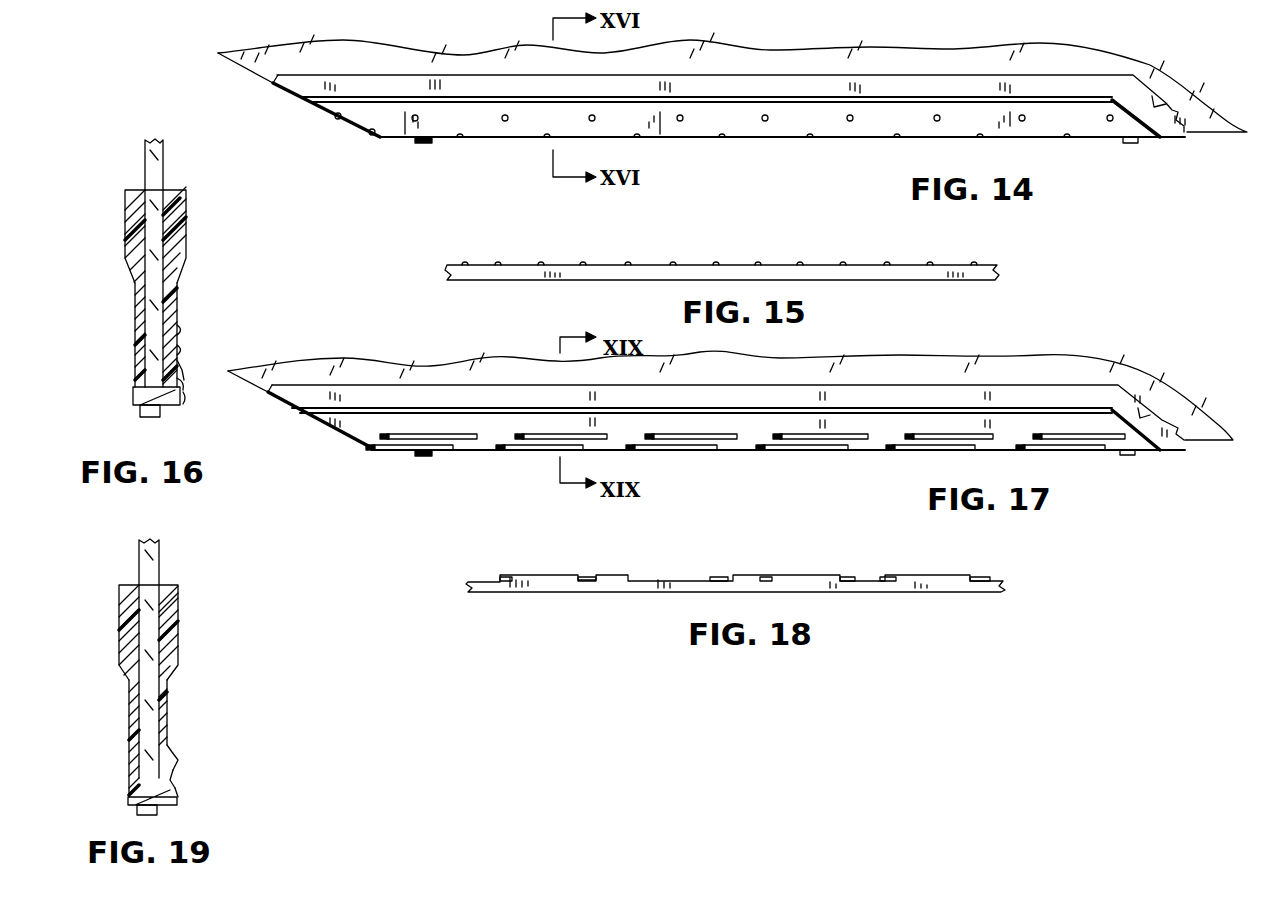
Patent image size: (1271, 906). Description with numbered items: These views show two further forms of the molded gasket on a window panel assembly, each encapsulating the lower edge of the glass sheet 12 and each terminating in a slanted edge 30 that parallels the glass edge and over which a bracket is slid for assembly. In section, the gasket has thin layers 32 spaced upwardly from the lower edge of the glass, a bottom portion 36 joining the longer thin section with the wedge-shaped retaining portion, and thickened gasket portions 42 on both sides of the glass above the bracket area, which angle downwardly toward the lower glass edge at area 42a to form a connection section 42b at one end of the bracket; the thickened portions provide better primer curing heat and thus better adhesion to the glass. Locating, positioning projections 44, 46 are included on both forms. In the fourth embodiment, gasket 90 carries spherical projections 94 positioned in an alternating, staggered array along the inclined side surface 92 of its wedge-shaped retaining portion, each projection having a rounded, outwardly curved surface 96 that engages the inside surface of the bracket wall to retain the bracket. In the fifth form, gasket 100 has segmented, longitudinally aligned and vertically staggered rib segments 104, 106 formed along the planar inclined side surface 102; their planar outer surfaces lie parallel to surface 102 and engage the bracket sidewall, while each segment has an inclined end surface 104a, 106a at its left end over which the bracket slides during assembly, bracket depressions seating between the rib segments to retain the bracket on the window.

In FIG. 14, the glass sheet 12 is at (878, 57).
In FIG. 16, the glass sheet 12 is at (164, 176).
In FIG. 17, the glass sheet 12 is at (880, 375).
In FIG. 19, the glass sheet 12 is at (160, 561).
In FIG. 14, the slanted edge 30 is at (320, 107).
In FIG. 17, the slanted edge 30 is at (318, 425).
In FIG. 16, the thin layers 32 is at (135, 312).
In FIG. 19, the thin layers 32 is at (130, 715).
In FIG. 16, the bottom portion 36 is at (180, 410).
In FIG. 19, the bottom portion 36 is at (172, 800).
In FIG. 14, the thickened gasket portions 42 is at (815, 82).
In FIG. 16, the thickened gasket portions 42 is at (125, 240).
In FIG. 17, the thickened gasket portions 42 is at (398, 392).
In FIG. 19, the thickened gasket portions 42 is at (120, 628).
In FIG. 14, the angled area 42a is at (1177, 108).
In FIG. 17, the angled area 42a is at (1150, 412).
In FIG. 17, the connection section 42b is at (1168, 452).
In FIG. 14, the locating projection 44 is at (424, 147).
In FIG. 17, the locating projection 44 is at (425, 458).
In FIG. 14, the locating projection 46 is at (1130, 144).
In FIG. 16, the locating projection 46 is at (140, 410).
In FIG. 17, the locating projection 46 is at (1128, 457).
In FIG. 19, the locating projection 46 is at (137, 808).
In FIG. 14, the gasket 90 is at (655, 78).
In FIG. 15, the gasket 90 is at (903, 281).
In FIG. 16, the gasket 90 is at (227, 242).
In FIG. 14, the inclined side surface 92 is at (395, 130).
In FIG. 15, the inclined side surface 92 is at (607, 266).
In FIG. 16, the inclined side surface 92 is at (182, 373).
In FIG. 19, the inclined side surface 92 is at (170, 630).
In FIG. 14, the spherical projections 94 is at (546, 139).
In FIG. 15, the spherical projections 94 is at (843, 265).
In FIG. 16, the spherical projections 94 is at (178, 332).
In FIG. 16, the outwardly curved surface 96 is at (178, 352).
In FIG. 17, the gasket 100 is at (749, 388).
In FIG. 18, the gasket 100 is at (633, 595).
In FIG. 19, the gasket 100 is at (250, 608).
In FIG. 19, the inclined side surface 102 is at (172, 770).
In FIG. 17, the rib segments 104 is at (450, 433).
In FIG. 18, the rib segments 104 is at (590, 578).
In FIG. 19, the rib segments 104 is at (176, 756).
In FIG. 17, the inclined end surface 104a is at (392, 433).
In FIG. 17, the rib segments 106 is at (440, 452).
In FIG. 18, the rib segments 106 is at (540, 576).
In FIG. 19, the rib segments 106 is at (176, 792).
In FIG. 17, the inclined end surface 106a is at (372, 452).
In FIG. 18, the inclined end surface 106a is at (488, 577).